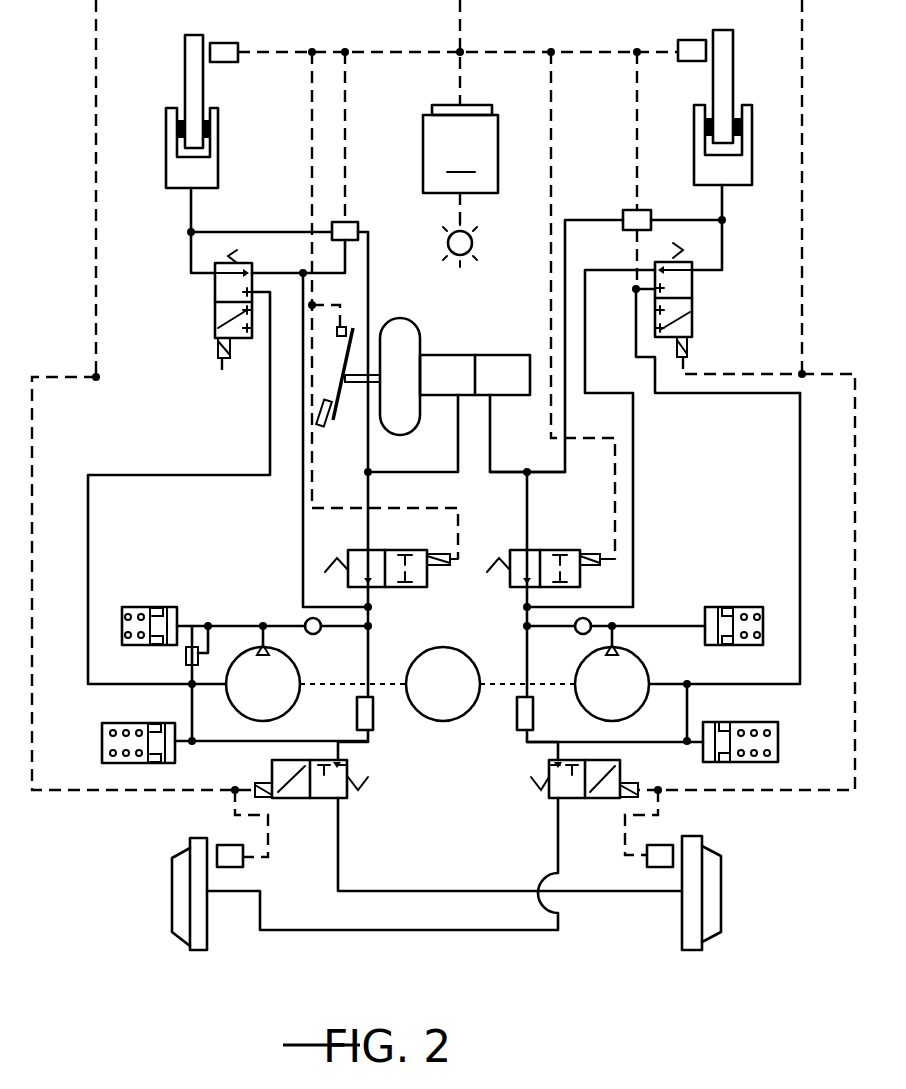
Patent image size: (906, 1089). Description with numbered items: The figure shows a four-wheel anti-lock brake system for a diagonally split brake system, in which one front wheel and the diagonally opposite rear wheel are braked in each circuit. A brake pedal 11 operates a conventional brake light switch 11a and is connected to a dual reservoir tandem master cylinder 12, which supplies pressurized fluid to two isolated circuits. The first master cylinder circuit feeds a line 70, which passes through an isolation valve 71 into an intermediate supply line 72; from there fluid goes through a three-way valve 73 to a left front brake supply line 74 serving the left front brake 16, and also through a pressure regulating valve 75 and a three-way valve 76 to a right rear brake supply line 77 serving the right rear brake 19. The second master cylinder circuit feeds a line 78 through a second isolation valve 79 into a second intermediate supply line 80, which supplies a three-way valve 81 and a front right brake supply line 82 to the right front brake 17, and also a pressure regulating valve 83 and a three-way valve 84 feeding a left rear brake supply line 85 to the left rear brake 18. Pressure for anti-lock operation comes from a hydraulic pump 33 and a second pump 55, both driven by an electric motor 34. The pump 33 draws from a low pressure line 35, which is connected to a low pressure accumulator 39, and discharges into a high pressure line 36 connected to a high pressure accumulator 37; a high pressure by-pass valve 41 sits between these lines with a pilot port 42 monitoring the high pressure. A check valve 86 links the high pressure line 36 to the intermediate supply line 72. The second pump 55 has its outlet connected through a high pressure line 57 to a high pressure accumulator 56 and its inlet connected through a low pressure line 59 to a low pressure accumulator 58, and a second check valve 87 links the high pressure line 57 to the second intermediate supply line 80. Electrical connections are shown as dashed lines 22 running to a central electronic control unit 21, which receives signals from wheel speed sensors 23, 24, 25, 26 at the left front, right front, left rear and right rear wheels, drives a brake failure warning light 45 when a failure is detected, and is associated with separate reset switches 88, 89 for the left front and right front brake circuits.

The brake pedal 11 is at (345, 397).
The brake light switch 11a is at (355, 312).
The tandem master cylinder 12 is at (452, 355).
The left front brake 16 is at (162, 188).
The right front brake 17 is at (755, 165).
The left rear brake 18 is at (178, 936).
The right rear brake 19 is at (727, 912).
The electronic control unit 21 is at (458, 96).
The dashed lines 22 is at (93, 136).
The wheel speed sensor 23 is at (238, 43).
The wheel speed sensor 24 is at (690, 40).
The wheel speed sensor 25 is at (236, 868).
The wheel speed sensor 26 is at (656, 870).
The hydraulic pump 33 is at (288, 711).
The electric motor 34 is at (481, 633).
The low pressure line 35 is at (245, 742).
The high pressure line 36 is at (262, 626).
The high pressure accumulator 37 is at (143, 607).
The low pressure accumulator 39 is at (123, 763).
The high pressure by-pass valve 41 is at (186, 660).
The pilot port 42 is at (212, 636).
The brake failure warning light 45 is at (473, 244).
The second pump 55 is at (677, 641).
The high pressure accumulator 56 is at (745, 607).
The high pressure line 57 is at (668, 624).
The low pressure accumulator 58 is at (750, 762).
The low pressure line 59 is at (735, 688).
The line 70 is at (457, 433).
The isolation valve 71 is at (393, 522).
The intermediate supply line 72 is at (303, 530).
The three-way valve 73 is at (215, 300).
The left front brake supply line 74 is at (191, 253).
The pressure regulating valve 75 is at (357, 705).
The three-way valve 76 is at (312, 800).
The right rear brake supply line 77 is at (458, 890).
The line 78 is at (493, 410).
The second isolation valve 79 is at (553, 548).
The second intermediate supply line 80 is at (635, 490).
The three-way valve 81 is at (693, 290).
The front right brake supply line 82 is at (723, 246).
The pressure regulating valve 83 is at (515, 718).
The three-way valve 84 is at (579, 800).
The left rear brake supply line 85 is at (363, 931).
The check valve 86 is at (307, 619).
The second check valve 87 is at (585, 618).
The reset switch 88 is at (352, 222).
The reset switch 89 is at (630, 212).